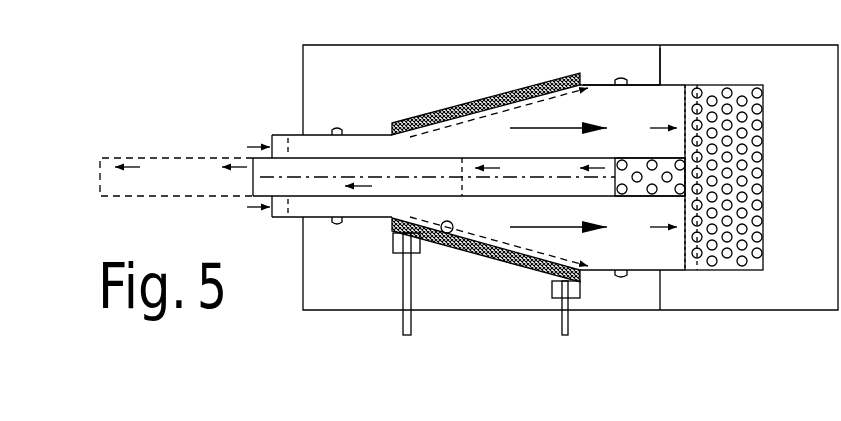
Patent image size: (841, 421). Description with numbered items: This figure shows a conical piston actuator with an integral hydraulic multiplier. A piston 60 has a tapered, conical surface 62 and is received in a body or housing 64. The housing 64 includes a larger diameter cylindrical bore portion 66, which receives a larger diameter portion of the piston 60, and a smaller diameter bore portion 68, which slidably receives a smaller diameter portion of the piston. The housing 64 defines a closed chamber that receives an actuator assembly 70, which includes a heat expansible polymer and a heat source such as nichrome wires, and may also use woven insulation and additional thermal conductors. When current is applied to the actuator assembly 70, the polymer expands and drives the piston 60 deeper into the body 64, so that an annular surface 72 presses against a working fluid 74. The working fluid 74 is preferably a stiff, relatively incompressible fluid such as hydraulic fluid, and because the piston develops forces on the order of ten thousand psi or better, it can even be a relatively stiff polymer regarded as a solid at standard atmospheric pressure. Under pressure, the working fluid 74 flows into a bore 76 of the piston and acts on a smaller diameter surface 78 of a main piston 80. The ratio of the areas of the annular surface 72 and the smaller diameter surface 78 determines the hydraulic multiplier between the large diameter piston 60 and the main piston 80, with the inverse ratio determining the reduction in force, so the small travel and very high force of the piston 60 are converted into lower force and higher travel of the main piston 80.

The piston 60 is at (413, 145).
The tapered conical surface 62 is at (446, 233).
The body or housing 64 is at (819, 298).
The larger diameter cylindrical bore portion 66 is at (668, 87).
The smaller diameter bore portion 68 is at (319, 137).
The actuator assembly 70 is at (500, 95).
The annular surface 72 is at (685, 212).
The working fluid 74 is at (725, 105).
The bore 76 is at (641, 197).
The smaller diameter surface 78 is at (635, 158).
The main piston 80 is at (253, 158).